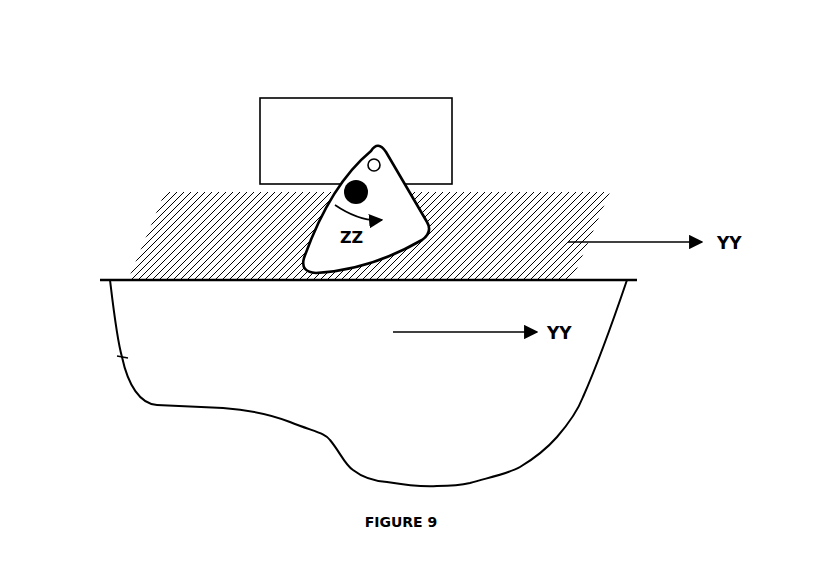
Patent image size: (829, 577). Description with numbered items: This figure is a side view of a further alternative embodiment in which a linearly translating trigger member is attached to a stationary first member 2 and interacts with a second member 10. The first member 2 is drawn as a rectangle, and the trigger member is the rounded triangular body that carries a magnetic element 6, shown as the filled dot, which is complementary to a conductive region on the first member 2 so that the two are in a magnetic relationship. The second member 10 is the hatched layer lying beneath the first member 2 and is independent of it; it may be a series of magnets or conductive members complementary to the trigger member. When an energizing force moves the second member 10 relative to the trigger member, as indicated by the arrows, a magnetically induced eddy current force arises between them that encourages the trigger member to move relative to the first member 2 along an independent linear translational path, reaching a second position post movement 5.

The first member 2 is at (277, 123).
The second position post movement 5 is at (550, 113).
The magnetic element 6 is at (538, 156).
The second member 10 is at (228, 233).